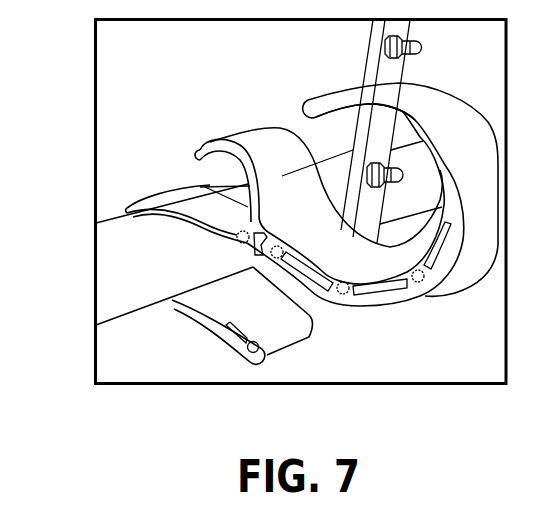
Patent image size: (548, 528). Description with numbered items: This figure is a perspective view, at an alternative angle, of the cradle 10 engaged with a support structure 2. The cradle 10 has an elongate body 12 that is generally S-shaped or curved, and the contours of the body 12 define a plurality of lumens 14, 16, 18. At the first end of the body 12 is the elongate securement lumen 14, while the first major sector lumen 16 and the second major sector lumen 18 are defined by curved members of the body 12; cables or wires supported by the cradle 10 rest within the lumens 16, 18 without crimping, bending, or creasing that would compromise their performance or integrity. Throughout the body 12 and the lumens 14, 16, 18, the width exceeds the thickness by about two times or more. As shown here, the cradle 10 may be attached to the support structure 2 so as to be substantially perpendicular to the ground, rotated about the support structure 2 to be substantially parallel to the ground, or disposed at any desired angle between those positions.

The cradle 10 is at (73, 147).
The support structure 2 is at (107, 280).
The elongate body 12 is at (383, 305).
The elongate securement lumen 14 is at (188, 318).
The first major sector lumen 16 is at (334, 152).
The second major sector lumen 18 is at (188, 181).